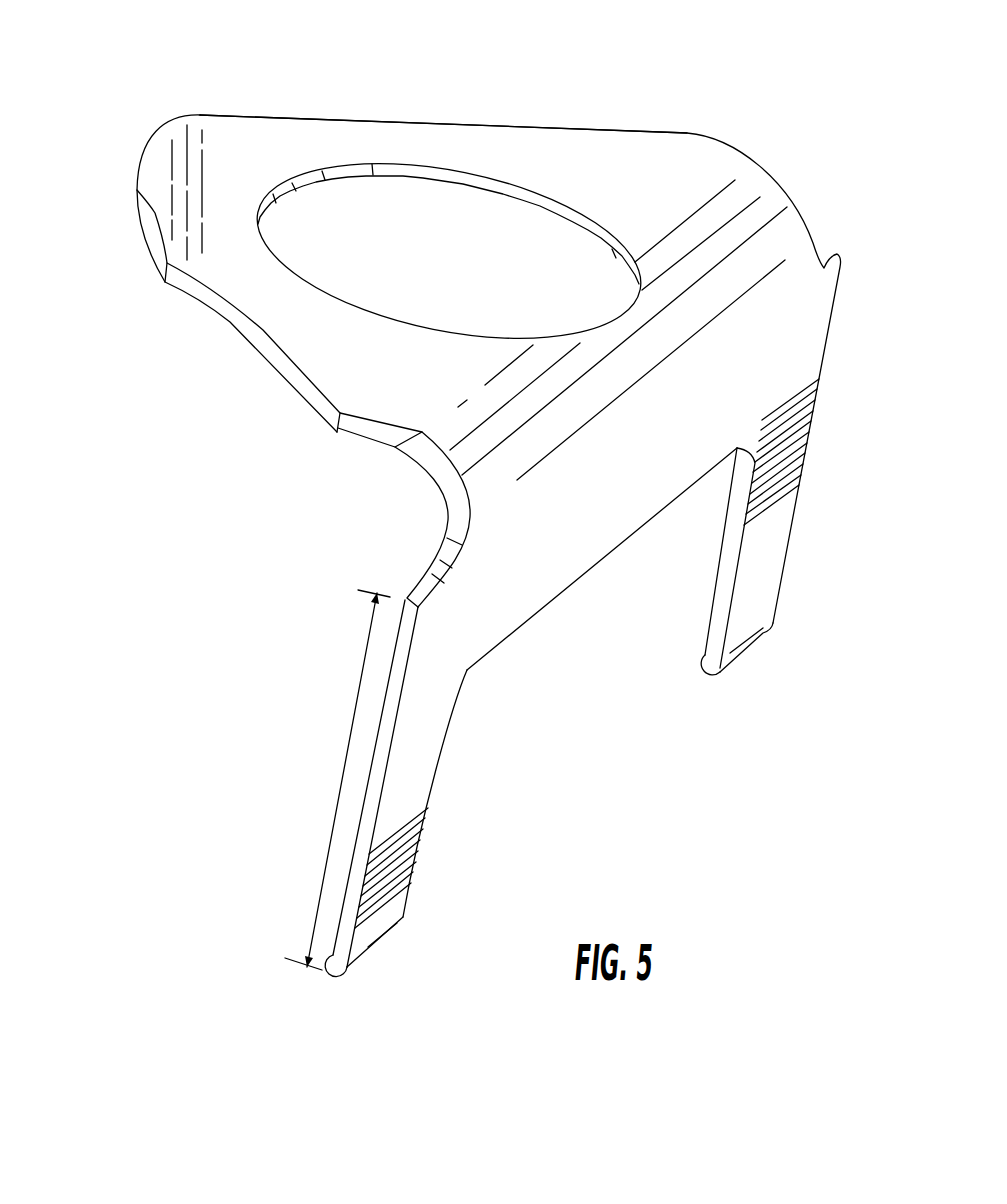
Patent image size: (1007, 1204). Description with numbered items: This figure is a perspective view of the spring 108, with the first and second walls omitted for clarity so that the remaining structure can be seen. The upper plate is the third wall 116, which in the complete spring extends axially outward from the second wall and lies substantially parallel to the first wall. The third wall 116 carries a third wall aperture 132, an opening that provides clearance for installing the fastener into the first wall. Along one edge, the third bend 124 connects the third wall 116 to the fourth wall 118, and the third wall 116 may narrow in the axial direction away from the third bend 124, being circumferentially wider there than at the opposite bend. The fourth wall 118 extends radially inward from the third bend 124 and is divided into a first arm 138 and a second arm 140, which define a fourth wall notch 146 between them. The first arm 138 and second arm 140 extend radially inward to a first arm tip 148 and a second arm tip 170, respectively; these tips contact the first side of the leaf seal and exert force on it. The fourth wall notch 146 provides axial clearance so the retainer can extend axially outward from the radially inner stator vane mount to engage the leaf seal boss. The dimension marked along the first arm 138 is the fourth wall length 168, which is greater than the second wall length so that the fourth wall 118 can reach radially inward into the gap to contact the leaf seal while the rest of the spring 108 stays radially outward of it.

The spring 108 is at (138, 82).
The third wall 116 is at (613, 148).
The fourth wall 118 is at (593, 532).
The third bend 124 is at (770, 207).
The third wall aperture 132 is at (410, 228).
The first arm 138 is at (410, 745).
The second arm 140 is at (762, 575).
The fourth wall notch 146 is at (547, 745).
The first arm tip 148 is at (377, 953).
The fourth wall length 168 is at (353, 718).
The second arm tip 170 is at (742, 652).